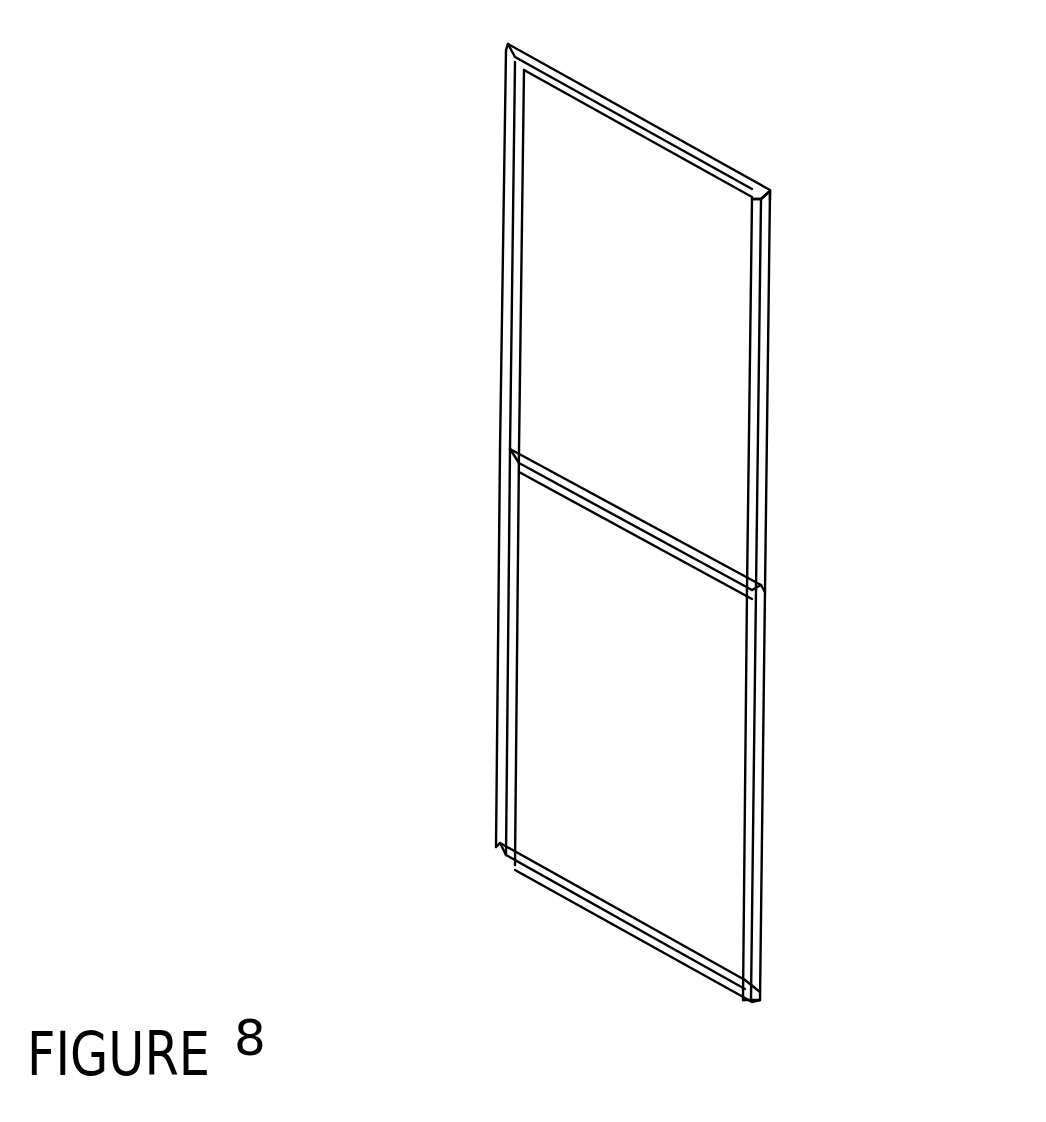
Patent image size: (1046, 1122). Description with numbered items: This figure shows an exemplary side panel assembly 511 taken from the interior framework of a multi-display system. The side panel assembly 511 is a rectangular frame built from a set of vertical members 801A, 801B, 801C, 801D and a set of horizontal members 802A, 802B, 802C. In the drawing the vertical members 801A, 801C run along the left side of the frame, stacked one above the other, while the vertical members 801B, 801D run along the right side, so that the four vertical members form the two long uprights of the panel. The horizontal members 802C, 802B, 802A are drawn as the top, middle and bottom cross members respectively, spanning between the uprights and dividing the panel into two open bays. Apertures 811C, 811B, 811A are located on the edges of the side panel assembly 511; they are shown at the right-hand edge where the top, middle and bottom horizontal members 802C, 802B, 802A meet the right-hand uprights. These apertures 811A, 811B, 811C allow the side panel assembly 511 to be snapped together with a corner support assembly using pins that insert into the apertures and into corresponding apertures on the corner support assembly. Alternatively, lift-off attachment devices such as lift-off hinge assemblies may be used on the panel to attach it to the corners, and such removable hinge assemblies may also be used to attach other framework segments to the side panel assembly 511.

The side panel assembly 511 is at (268, 125).
The vertical member 801A is at (494, 289).
The vertical member 801B is at (780, 338).
The vertical member 801C is at (492, 636).
The vertical member 801D is at (775, 726).
The horizontal member 802A is at (614, 891).
The horizontal member 802B is at (622, 496).
The horizontal member 802C is at (647, 110).
The aperture 811A is at (762, 998).
The aperture 811B is at (773, 598).
The aperture 811C is at (783, 203).